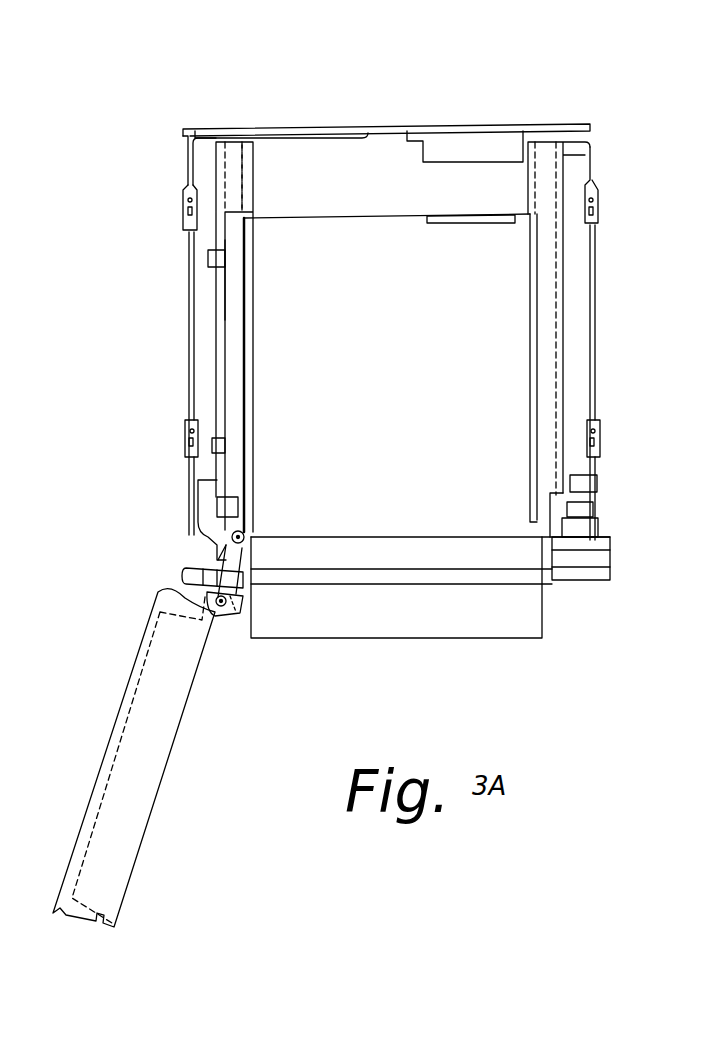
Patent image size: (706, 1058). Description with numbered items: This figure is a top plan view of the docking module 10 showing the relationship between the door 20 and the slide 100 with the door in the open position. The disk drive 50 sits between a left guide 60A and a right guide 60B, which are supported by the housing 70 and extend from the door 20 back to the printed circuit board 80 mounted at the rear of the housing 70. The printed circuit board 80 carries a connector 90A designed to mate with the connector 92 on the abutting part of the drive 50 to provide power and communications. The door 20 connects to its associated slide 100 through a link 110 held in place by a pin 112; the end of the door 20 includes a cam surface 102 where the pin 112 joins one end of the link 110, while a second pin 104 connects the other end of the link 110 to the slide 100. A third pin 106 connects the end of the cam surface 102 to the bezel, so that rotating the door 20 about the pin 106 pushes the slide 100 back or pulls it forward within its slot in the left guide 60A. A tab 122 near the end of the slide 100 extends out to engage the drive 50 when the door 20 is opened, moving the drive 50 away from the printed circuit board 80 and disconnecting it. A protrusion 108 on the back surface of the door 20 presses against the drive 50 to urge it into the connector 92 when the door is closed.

The docking module 10 is at (702, 482).
The door 20 is at (160, 738).
The disk drive 50 is at (517, 625).
The left guide 60A is at (232, 155).
The right guide 60B is at (543, 182).
The housing 70 is at (192, 352).
The printed circuit board 80 is at (327, 128).
The connector 90A is at (462, 150).
The connector 92 is at (483, 223).
The slide 100 is at (232, 282).
The cam surface 102 is at (216, 618).
The second pin 104 is at (237, 498).
The third pin 106 is at (203, 574).
The protrusion 108 is at (153, 657).
The link 110 is at (227, 555).
The pin 112 is at (216, 614).
The tab 122 is at (248, 213).